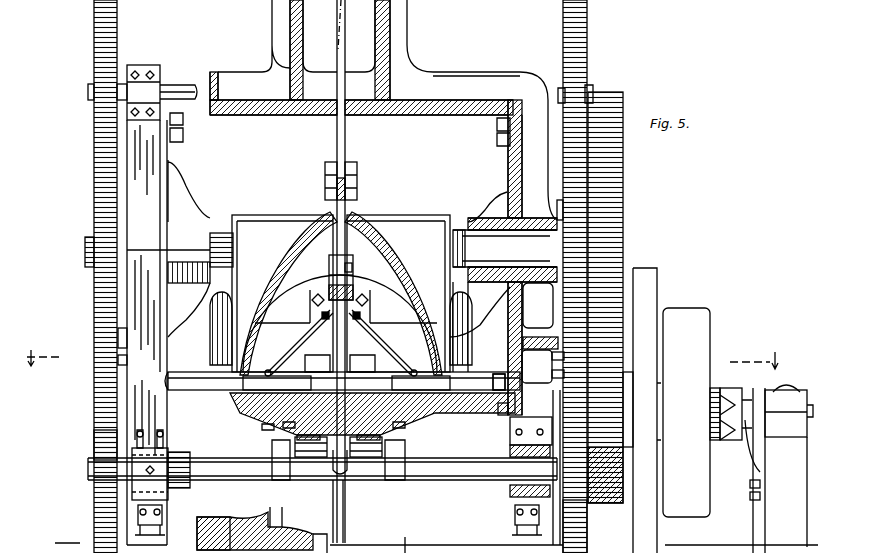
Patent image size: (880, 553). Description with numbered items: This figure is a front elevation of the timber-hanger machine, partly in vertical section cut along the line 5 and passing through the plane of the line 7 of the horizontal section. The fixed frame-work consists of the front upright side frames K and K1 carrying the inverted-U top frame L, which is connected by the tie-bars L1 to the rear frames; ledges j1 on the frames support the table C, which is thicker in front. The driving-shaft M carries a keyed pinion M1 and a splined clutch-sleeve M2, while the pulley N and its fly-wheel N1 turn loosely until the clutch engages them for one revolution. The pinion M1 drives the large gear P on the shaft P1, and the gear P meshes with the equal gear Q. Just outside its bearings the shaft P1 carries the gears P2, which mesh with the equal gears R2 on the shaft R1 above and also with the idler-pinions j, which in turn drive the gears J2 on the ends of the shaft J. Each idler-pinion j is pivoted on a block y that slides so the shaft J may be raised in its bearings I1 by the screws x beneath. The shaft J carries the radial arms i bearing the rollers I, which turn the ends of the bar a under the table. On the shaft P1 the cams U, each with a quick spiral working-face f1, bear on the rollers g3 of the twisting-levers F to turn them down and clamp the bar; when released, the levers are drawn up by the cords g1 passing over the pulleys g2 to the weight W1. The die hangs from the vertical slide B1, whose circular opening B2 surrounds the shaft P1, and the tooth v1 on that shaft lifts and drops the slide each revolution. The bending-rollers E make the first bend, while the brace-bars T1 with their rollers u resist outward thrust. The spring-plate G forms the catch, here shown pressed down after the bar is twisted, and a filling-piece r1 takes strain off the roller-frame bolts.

The gear R2 is at (118, 27).
The shaft R1 is at (172, 84).
The top frame L is at (383, 207).
The tie-bar L1 is at (497, 132).
The vertical slide B1 is at (345, 150).
The weight W1 is at (325, 178).
The quick spiral working-face f1 is at (353, 217).
The gear P2 is at (95, 222).
The shaft P1 is at (383, 248).
The cam U is at (341, 293).
The large gear P is at (623, 222).
The upright side frame K1 is at (130, 323).
The opening B2 is at (330, 286).
The tooth v1 is at (352, 268).
The pulley g2 is at (313, 301).
The roller g3 is at (228, 340).
The cord or chain g1 is at (297, 342).
The bending-roller E is at (340, 359).
The twisting-lever F is at (346, 383).
The brace-bar T1 is at (342, 381).
The roller u is at (490, 382).
The table C is at (357, 413).
The spring-plate G is at (339, 427).
The bar a is at (318, 429).
The roller I is at (338, 447).
The radial arm i is at (338, 461).
The rotary shaft J is at (322, 469).
The bearing I1 is at (341, 465).
The gear J2 is at (96, 445).
The gear Q is at (605, 503).
The screw x is at (165, 510).
The filling-piece r1 is at (197, 525).
The section line 5 is at (263, 552).
The pinion M1 is at (634, 425).
The ledge j1 is at (500, 412).
The upright side frame K is at (538, 305).
The idler-pinion j is at (535, 342).
The block y is at (552, 360).
The fly-wheel N1 is at (658, 280).
The pulley N is at (686, 412).
The clutch-sleeve M2 is at (727, 388).
The driving-shaft M is at (805, 410).
The section line 7 is at (403, 360).